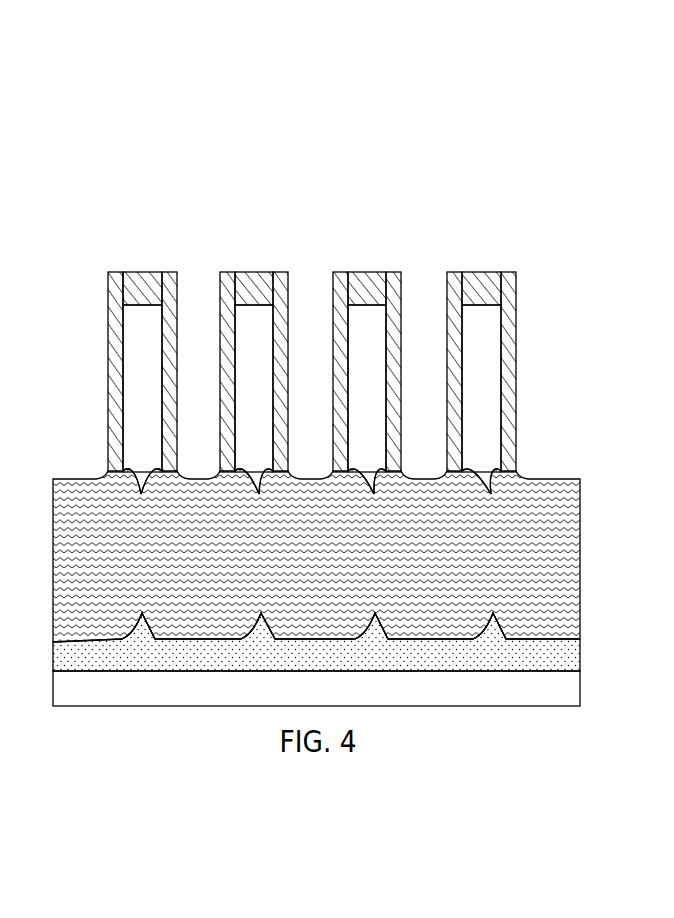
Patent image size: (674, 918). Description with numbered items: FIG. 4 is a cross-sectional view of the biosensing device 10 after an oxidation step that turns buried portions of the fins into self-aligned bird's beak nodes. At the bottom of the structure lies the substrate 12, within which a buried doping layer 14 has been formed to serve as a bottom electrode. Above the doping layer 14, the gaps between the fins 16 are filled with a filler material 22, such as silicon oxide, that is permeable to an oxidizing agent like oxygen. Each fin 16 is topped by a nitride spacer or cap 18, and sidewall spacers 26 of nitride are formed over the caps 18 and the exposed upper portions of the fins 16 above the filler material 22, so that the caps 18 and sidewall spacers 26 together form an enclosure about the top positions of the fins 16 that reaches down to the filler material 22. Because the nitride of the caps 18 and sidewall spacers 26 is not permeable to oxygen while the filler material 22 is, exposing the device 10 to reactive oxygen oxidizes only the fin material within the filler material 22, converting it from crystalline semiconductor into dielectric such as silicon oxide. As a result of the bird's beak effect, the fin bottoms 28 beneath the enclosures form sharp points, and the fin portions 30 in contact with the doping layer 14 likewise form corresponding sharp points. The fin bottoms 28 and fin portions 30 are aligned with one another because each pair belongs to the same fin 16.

The biosensing device 10 is at (330, 16).
The substrate 12 is at (568, 693).
The buried doping layer 14 is at (570, 648).
The fins 16 is at (137, 340).
The spacers or caps 18 is at (145, 272).
The filler material 22 is at (570, 503).
The sidewall spacers 26 is at (115, 272).
The fin bottoms 28 is at (141, 470).
The fin portions 30 is at (253, 633).